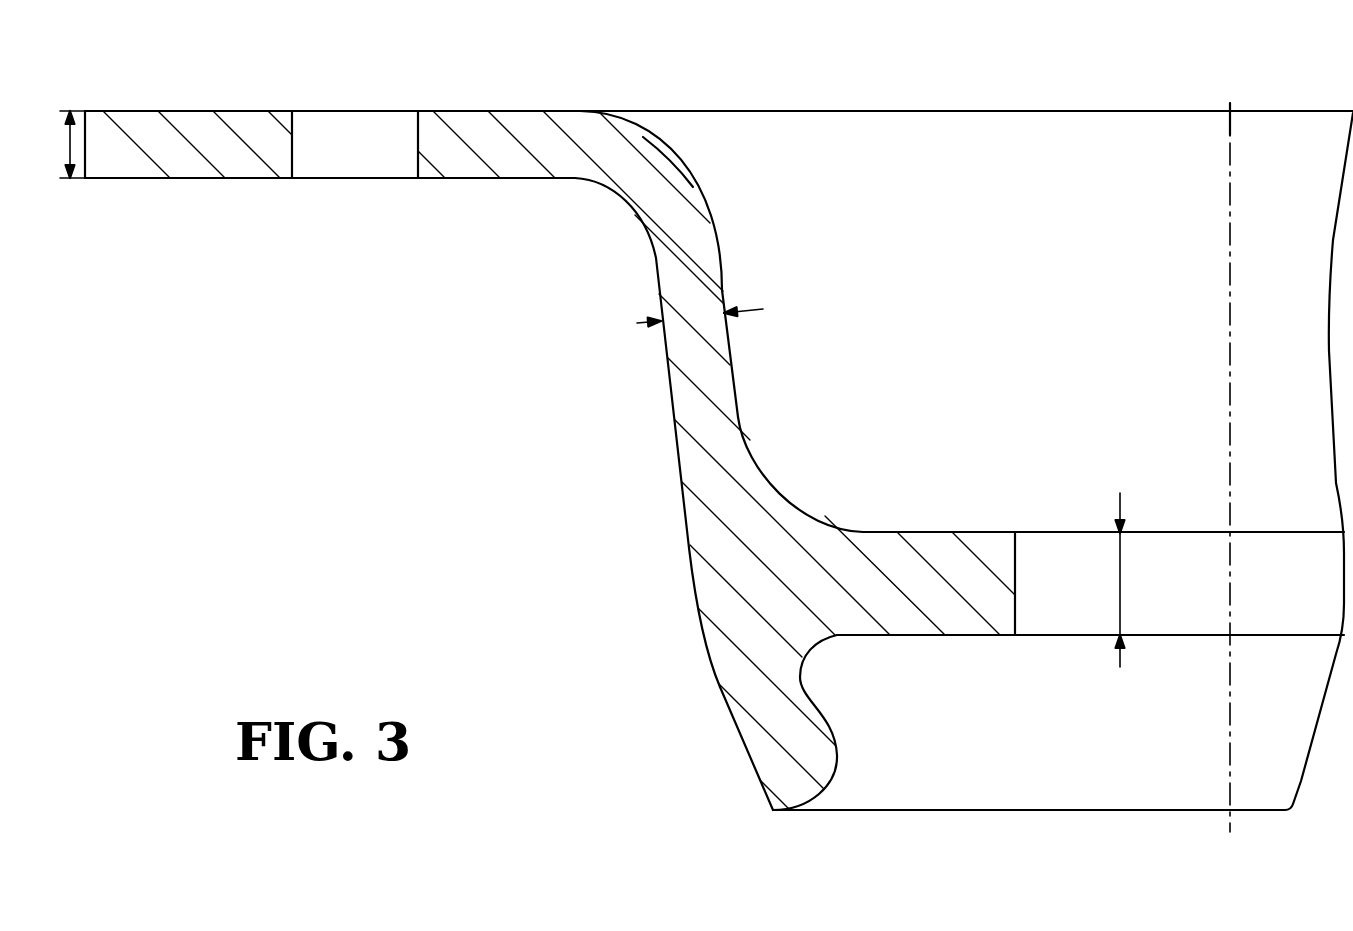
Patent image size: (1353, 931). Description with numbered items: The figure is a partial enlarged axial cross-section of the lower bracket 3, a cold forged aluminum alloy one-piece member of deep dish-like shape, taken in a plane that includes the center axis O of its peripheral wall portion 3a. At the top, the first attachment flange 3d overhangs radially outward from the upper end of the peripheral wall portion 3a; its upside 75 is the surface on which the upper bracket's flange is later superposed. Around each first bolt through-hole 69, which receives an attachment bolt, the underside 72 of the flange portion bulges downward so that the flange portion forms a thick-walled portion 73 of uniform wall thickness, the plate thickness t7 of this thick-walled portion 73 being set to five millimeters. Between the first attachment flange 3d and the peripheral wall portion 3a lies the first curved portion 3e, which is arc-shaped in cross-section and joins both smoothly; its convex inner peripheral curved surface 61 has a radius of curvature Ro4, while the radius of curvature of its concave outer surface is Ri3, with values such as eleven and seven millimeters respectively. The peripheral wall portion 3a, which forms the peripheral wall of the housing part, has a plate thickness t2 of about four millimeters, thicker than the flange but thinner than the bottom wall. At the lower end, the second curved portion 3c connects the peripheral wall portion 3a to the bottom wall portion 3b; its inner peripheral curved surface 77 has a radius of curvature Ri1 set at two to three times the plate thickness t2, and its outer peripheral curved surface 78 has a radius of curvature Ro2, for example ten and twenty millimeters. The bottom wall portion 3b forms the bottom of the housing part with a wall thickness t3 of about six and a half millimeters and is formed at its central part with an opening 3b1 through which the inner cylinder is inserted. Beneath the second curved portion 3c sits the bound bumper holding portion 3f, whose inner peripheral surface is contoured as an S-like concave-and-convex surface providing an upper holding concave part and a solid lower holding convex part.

The lower bracket 3 is at (1050, 95).
The first attachment flange 3d is at (188, 111).
The upside of the first attachment flange 75 is at (255, 111).
The thick-walled portion 73 is at (168, 157).
The underside of the flange portion 72 is at (248, 180).
The first bolt through-hole 69 is at (413, 166).
The plate thickness of the thick-walled portion t7 is at (53, 144).
The radius of curvature of the first curved portion on its inner peripheral curved s Ro4 is at (550, 268).
The radius of curvature of the first curved portion on its outer peripheral curved s Ri3 is at (597, 187).
The inner peripheral curved surface 61 is at (681, 170).
The first curved portion 3e is at (677, 203).
The peripheral wall portion 3a is at (710, 370).
The plate thickness of the peripheral wall portion t2 is at (704, 300).
The radius of curvature of the second curved portion on its inner peripheral curved Ri1 is at (837, 427).
The inner peripheral curved surface 77 is at (813, 510).
The second curved portion 3c is at (717, 537).
The bottom wall portion 3b is at (940, 550).
The wall thickness of the bottom wall portion t3 is at (1101, 580).
The opening 3b1 is at (1015, 613).
The radius of curvature of the second curved portion on its outer peripheral curved Ro2 is at (778, 630).
The outer peripheral curved surface 78 is at (720, 682).
The bound bumper holding portion 3f is at (753, 738).
The center axis O is at (1233, 128).